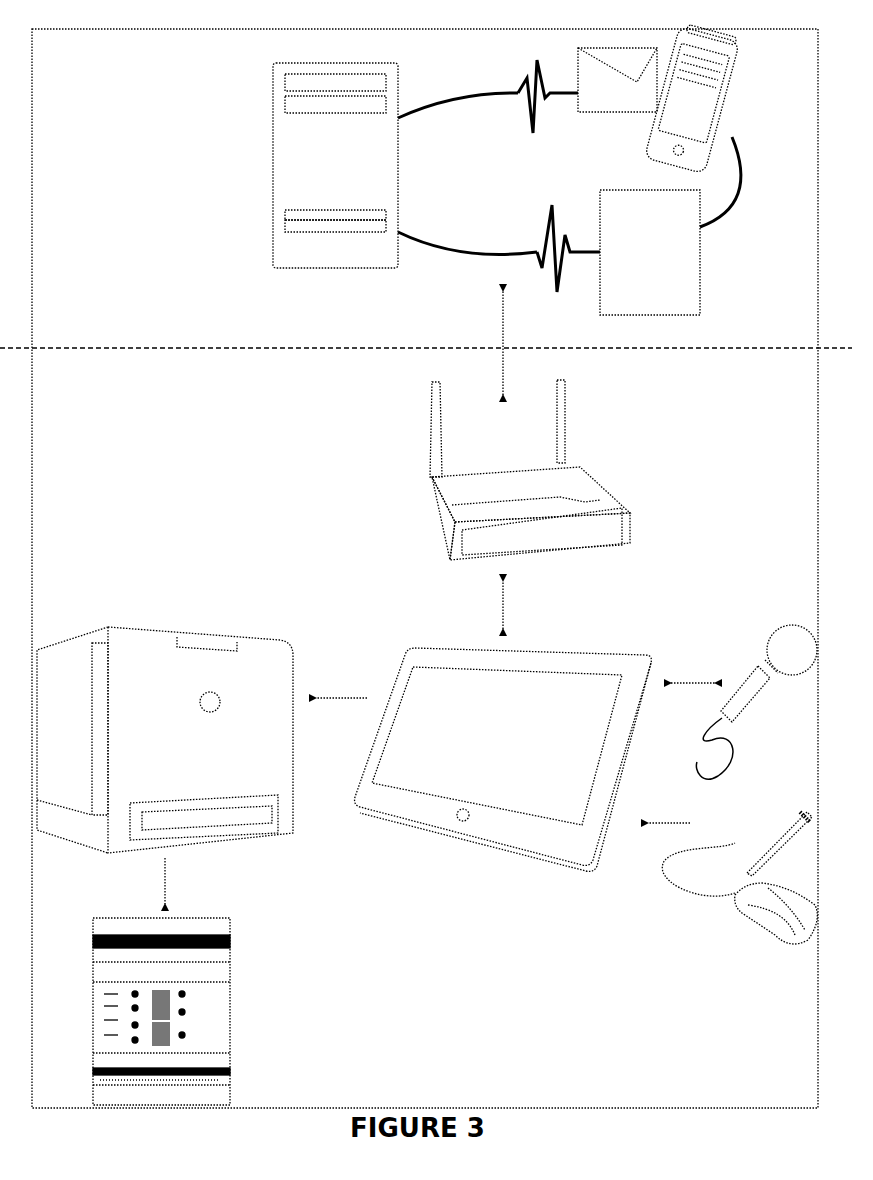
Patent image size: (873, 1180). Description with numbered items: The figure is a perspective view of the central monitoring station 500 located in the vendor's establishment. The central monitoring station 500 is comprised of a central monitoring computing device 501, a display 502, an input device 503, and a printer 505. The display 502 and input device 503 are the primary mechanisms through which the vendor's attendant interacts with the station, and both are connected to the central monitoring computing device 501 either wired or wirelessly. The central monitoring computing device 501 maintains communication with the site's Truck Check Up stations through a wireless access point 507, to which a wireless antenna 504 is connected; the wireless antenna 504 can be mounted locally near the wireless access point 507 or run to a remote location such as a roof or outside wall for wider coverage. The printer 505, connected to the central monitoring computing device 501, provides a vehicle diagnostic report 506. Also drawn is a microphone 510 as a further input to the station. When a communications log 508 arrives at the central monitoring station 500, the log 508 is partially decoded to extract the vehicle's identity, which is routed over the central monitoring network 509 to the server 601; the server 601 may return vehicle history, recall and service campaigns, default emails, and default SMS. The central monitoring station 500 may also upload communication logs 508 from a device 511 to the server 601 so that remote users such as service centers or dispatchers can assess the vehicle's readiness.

The central monitoring station 500 is at (125, 429).
The central monitoring computing device 501 is at (486, 785).
The display 502 is at (460, 832).
The input device 503 is at (733, 873).
The wireless antenna 504 is at (565, 428).
The printer 505 is at (197, 642).
The vehicle diagnostic report 506 is at (233, 1022).
The wireless access point 507 is at (433, 515).
The communications log 508 is at (702, 260).
The central monitoring network 509 is at (442, 103).
The microphone 510 is at (745, 668).
The device 511 is at (727, 103).
The server 601 is at (277, 143).